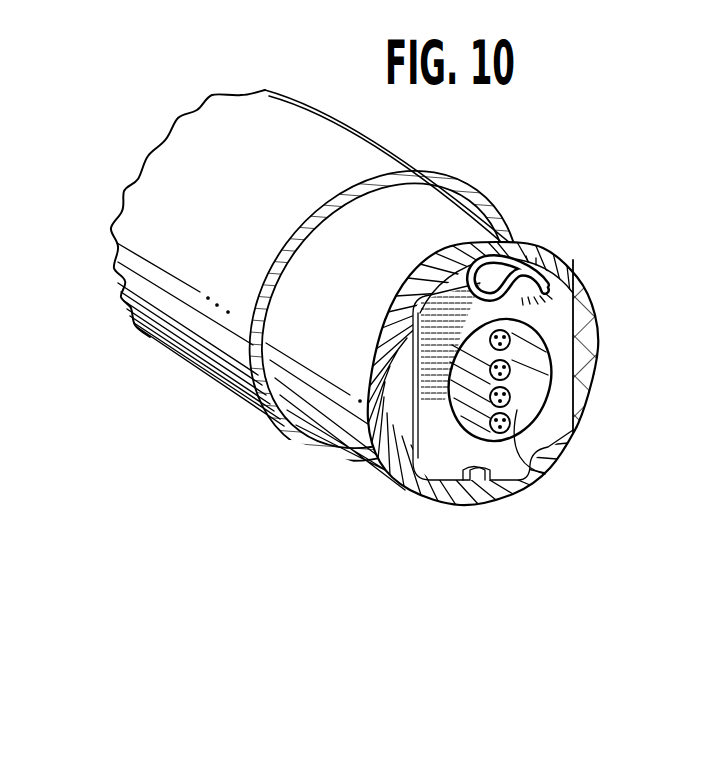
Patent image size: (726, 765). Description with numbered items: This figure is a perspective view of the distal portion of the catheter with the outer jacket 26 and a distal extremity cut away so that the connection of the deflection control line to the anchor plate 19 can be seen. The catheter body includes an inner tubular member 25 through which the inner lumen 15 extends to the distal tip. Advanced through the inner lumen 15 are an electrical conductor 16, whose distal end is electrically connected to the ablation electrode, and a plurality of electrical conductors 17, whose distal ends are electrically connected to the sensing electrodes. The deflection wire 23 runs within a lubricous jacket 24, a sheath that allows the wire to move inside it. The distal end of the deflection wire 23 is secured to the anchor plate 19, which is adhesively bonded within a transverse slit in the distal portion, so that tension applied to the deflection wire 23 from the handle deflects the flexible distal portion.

The inner lumen 15 is at (520, 405).
The electrical conductor 16 is at (541, 385).
The electrical conductors 17 is at (478, 405).
The anchor plate 19 is at (550, 308).
The deflection wire 23 is at (555, 270).
The jacket 24 is at (493, 262).
The inner tubular member 25 is at (365, 458).
The outer jacket 26 is at (233, 360).